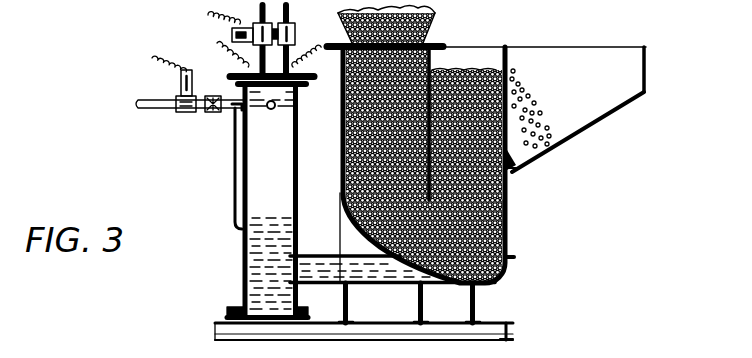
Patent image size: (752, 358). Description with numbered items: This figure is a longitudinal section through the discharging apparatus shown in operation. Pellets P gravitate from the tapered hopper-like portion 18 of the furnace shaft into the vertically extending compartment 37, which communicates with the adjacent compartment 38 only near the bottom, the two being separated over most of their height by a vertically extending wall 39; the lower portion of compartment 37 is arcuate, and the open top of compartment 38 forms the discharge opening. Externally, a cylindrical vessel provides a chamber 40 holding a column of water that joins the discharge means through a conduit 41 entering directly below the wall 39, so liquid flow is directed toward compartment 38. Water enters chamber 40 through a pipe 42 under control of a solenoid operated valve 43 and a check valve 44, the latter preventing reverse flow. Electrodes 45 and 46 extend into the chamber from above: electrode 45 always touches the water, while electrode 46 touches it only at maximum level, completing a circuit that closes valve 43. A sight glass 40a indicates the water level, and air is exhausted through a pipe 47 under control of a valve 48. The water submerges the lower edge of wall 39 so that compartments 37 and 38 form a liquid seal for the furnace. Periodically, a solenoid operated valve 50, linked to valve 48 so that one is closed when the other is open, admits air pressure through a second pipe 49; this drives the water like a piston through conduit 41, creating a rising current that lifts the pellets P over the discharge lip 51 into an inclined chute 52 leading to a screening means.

The hopper-like portion 18 is at (433, 12).
The compartment 37 is at (341, 122).
The compartment 38 is at (519, 168).
The vertically extending wall 39 is at (440, 70).
The chamber 40 is at (242, 272).
The sight glass 40a is at (232, 182).
The conduit 41 is at (325, 255).
The pipe 42 is at (160, 108).
The solenoid operated valve 43 is at (178, 80).
The check valve 44 is at (222, 86).
The electrode 45 is at (271, 236).
The electrode 46 is at (271, 96).
The pipe 47 is at (291, 19).
The valve 48 is at (296, 37).
The second pipe 49 is at (260, 22).
The solenoid operated valve 50 is at (232, 35).
The discharge lip 51 is at (516, 78).
The inclined chute 52 is at (626, 36).
The pellets P is at (509, 218).